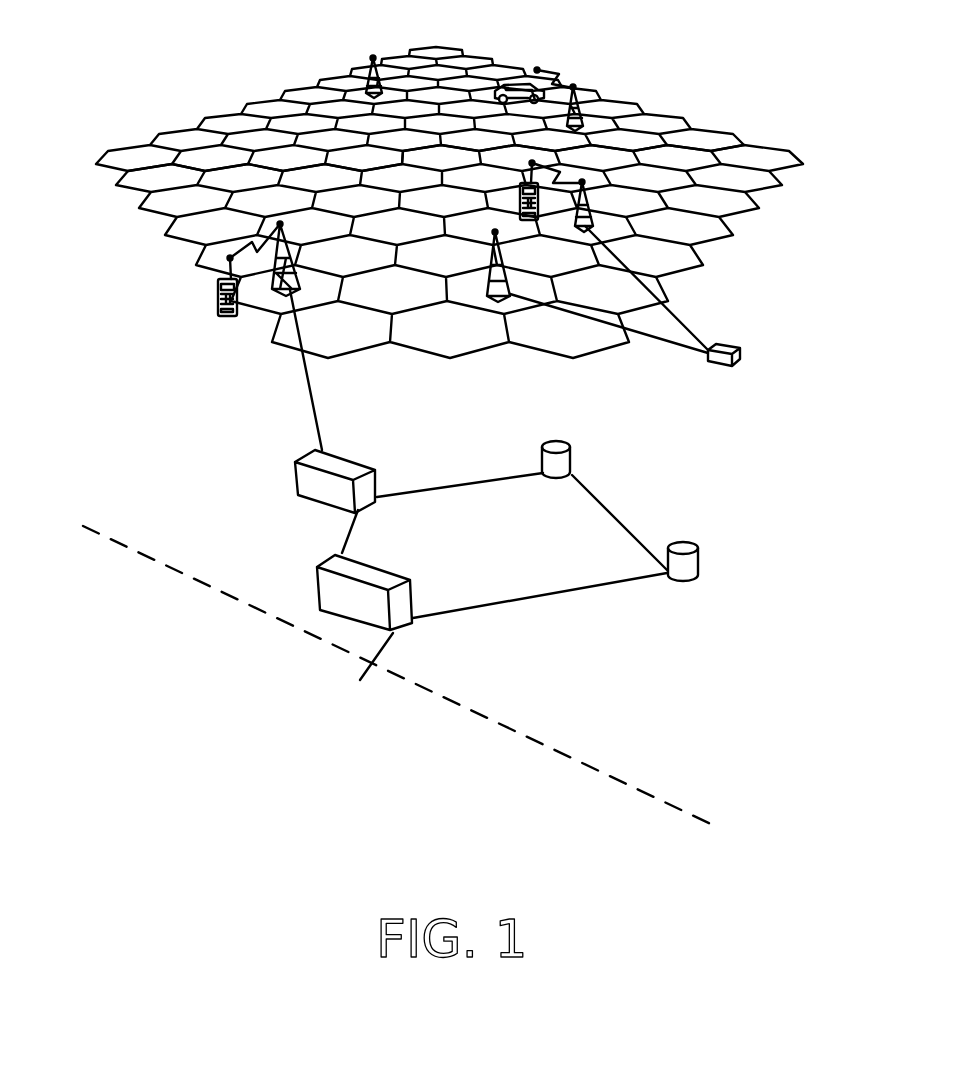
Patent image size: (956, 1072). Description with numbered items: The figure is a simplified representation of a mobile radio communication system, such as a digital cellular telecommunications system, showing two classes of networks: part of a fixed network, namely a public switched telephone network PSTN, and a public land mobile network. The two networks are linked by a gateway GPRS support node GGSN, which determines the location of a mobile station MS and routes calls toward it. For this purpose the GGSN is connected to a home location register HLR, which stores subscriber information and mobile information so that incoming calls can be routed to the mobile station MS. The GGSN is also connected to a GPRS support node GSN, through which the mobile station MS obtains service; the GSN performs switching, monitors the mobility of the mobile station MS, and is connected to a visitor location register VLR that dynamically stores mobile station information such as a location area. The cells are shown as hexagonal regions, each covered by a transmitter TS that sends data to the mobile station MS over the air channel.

The transmitter TS is at (374, 62).
The mobile station MS is at (518, 188).
The GPRS support node GSN is at (732, 344).
The gateway GPRS support node GGSN is at (398, 572).
The visitor location register VLR is at (570, 442).
The home location register HLR is at (688, 540).
The public switched telephone network PSTN is at (399, 676).